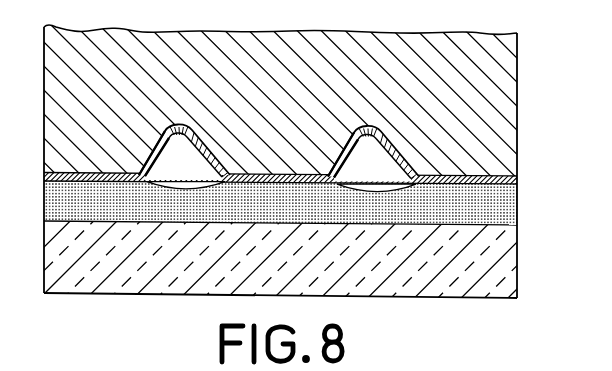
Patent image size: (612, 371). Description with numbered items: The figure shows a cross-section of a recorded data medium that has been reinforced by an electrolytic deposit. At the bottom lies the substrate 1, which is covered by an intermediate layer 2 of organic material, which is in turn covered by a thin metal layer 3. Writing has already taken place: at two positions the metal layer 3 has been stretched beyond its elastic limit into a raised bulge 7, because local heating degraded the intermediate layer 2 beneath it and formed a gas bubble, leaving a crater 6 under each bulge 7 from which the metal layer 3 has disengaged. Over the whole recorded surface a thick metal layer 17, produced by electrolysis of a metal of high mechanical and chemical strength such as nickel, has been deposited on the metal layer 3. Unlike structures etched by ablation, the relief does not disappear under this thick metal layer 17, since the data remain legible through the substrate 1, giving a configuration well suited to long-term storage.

The substrate 1 is at (518, 263).
The intermediate layer 2 is at (518, 200).
The metal layer 3 is at (518, 179).
The crater 6 is at (188, 184).
The bulge 7 is at (171, 128).
The thick metal layer 17 is at (518, 111).